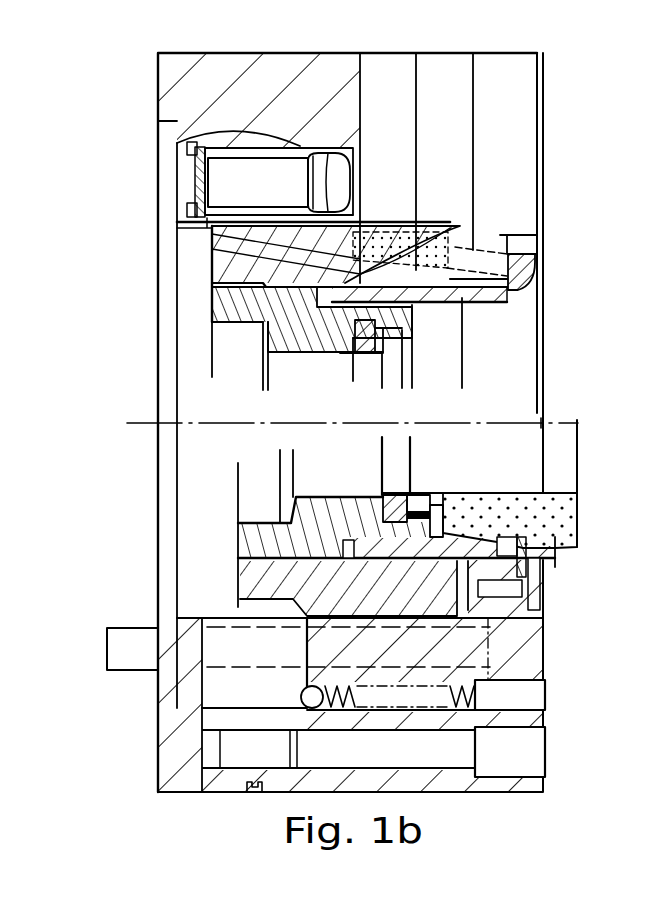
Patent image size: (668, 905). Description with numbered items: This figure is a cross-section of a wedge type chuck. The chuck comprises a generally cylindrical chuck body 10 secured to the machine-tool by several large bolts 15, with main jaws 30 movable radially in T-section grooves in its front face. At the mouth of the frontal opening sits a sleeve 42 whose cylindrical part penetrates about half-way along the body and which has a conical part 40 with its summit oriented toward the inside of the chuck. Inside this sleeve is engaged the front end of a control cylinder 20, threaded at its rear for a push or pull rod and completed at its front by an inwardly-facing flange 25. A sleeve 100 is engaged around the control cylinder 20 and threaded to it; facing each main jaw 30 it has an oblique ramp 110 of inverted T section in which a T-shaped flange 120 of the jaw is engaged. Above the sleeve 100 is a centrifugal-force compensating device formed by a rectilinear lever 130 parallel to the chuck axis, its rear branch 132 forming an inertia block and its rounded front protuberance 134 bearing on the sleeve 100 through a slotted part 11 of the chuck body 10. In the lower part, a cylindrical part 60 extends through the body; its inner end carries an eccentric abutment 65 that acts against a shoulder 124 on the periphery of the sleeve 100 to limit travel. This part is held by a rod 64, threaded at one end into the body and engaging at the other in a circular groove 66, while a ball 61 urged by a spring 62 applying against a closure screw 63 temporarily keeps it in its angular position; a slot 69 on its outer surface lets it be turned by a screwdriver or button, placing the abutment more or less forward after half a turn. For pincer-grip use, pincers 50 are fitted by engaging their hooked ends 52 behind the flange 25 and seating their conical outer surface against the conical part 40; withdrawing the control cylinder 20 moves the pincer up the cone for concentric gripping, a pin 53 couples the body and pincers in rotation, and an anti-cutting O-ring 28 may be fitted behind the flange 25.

The chuck body 10 is at (183, 101).
The main jaw 30 is at (443, 110).
The lever 130 is at (190, 142).
The rear branch 132 is at (240, 179).
The rounded front protuberance 134 is at (353, 168).
The slotted part 11 is at (357, 217).
The oblique ramp 110 is at (473, 235).
The flange 120 is at (553, 249).
The sleeve 100 is at (210, 247).
The sleeve 42 is at (535, 258).
The conical part 40 is at (505, 302).
The control cylinder 20 is at (233, 307).
The flange 25 is at (402, 331).
The anti-cutting O-ring 28 is at (355, 353).
The hooked end 52 is at (422, 505).
The pincer 50 is at (520, 512).
The pin 53 is at (545, 546).
The shoulder 124 is at (240, 568).
The eccentric abutment 65 is at (277, 609).
The bolt 15 is at (123, 647).
The cylindrical part 60 is at (233, 680).
The circular groove 66 is at (212, 744).
The ball 61 is at (300, 697).
The spring 62 is at (437, 683).
The closure screw 63 is at (530, 690).
The rod 64 is at (507, 747).
The slot 69 is at (250, 785).